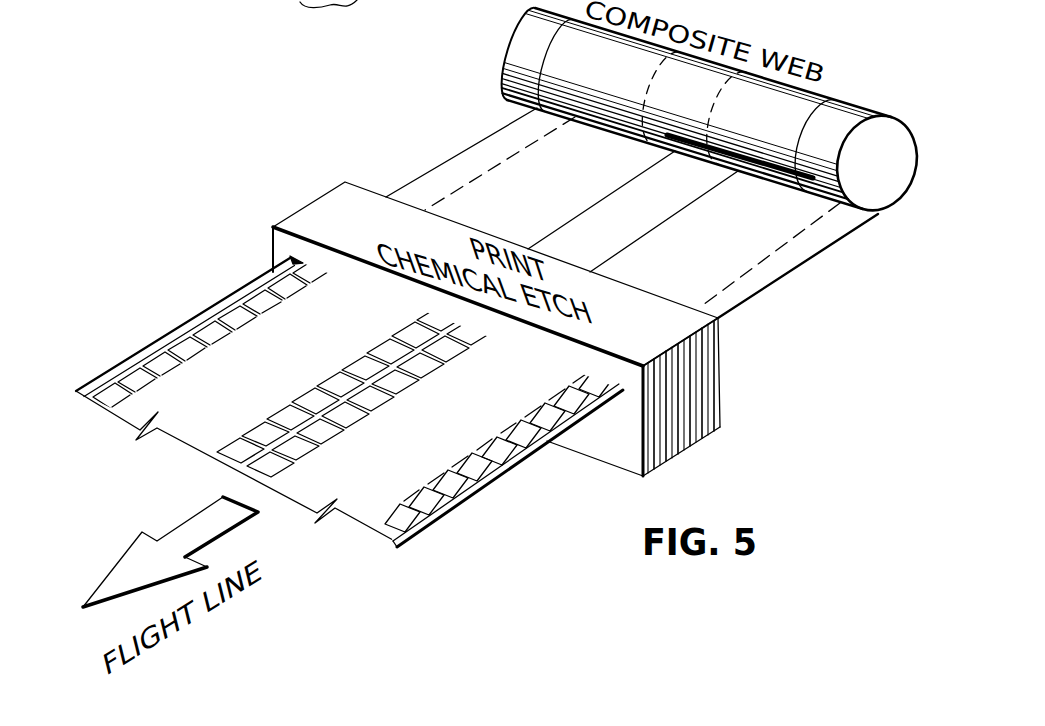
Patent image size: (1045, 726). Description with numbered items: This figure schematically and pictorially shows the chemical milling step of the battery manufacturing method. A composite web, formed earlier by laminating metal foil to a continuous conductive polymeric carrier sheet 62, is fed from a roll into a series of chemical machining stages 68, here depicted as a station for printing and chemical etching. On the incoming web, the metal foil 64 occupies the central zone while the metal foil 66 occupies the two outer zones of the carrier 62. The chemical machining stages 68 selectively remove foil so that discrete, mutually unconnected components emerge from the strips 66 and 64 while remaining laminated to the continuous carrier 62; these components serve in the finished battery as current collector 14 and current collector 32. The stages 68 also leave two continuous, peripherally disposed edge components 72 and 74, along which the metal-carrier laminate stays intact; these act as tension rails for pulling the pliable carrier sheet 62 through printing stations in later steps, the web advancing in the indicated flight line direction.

The current collector 14 is at (118, 396).
The current collector 32 is at (226, 449).
The carrier web 62 is at (700, 280).
The metal foil 64 is at (586, 218).
The metal foil 66 is at (456, 160).
The chemical machining stages 68 is at (707, 383).
The edge component 72 is at (423, 525).
The edge component 74 is at (166, 337).